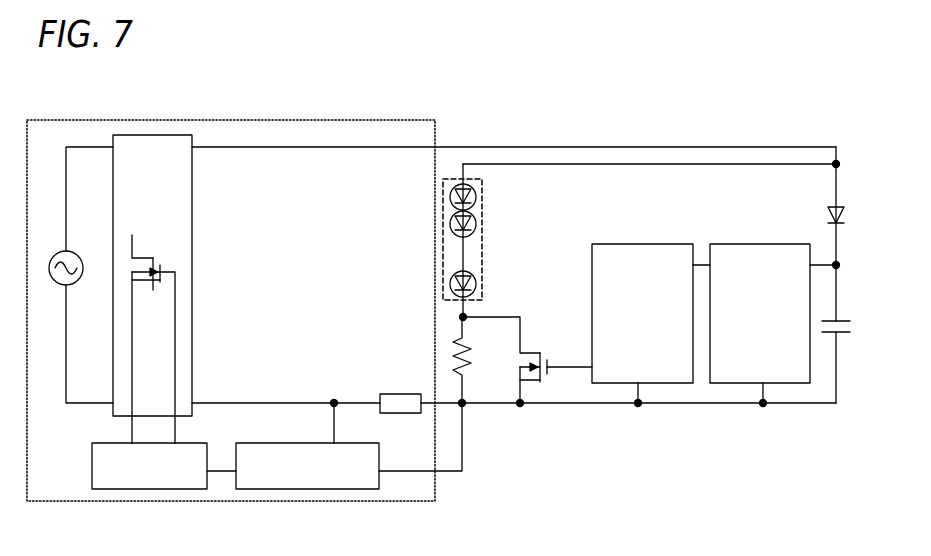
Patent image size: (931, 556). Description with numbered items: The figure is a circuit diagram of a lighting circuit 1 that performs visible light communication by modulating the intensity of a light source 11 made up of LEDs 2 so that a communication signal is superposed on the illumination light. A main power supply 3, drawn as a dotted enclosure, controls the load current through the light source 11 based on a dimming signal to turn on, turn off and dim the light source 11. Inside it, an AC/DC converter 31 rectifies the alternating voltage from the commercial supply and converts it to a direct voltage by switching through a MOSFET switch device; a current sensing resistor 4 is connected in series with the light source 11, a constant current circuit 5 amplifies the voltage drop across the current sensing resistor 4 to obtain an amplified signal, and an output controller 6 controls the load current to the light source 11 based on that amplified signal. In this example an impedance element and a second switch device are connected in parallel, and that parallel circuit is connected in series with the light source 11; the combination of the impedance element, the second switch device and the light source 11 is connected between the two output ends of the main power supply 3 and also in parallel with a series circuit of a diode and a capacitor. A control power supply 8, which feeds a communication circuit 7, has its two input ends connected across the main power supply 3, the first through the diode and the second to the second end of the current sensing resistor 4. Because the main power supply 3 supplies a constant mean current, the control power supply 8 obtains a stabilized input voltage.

The lighting circuit 1 is at (55, 105).
The main power supply 3 is at (390, 120).
The AC/DC converter 31 is at (192, 181).
The light source 11 is at (478, 179).
The LED 2 is at (477, 197).
The current sensing resistor 4 is at (397, 394).
The constant current circuit 5 is at (335, 489).
The output controller 6 is at (148, 489).
The communication circuit 7 is at (635, 244).
The control power supply 8 is at (765, 244).